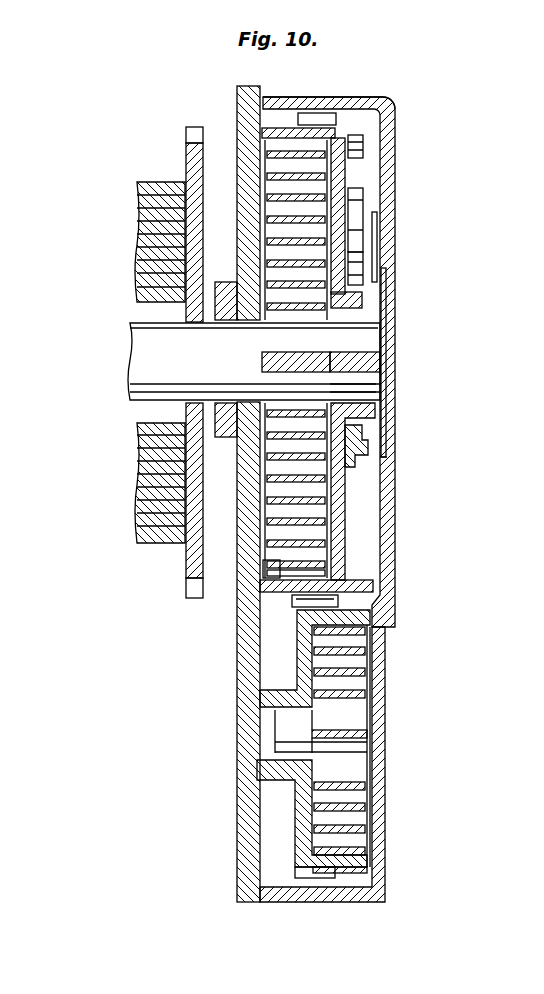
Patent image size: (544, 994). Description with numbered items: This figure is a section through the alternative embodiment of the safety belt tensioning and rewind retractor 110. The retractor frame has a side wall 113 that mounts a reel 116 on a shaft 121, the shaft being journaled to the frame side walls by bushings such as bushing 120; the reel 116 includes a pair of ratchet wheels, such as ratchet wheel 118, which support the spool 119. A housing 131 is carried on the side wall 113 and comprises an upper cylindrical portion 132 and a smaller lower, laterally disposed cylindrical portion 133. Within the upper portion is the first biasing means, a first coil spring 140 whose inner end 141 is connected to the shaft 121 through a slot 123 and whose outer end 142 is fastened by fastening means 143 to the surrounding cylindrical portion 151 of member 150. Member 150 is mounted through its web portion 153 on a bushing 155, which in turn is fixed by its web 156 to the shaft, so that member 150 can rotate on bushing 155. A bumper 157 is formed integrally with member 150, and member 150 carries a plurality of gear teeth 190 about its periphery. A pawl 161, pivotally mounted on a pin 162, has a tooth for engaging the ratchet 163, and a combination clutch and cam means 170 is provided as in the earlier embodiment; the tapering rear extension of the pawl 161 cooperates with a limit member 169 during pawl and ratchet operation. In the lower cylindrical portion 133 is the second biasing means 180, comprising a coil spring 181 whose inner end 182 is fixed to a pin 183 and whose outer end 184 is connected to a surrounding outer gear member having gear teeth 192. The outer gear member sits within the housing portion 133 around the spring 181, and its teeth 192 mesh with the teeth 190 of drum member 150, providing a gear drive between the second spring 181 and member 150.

The retractor 110 is at (172, 128).
The side wall 113 is at (237, 108).
The reel 116 is at (143, 548).
The ratchet wheel 118 is at (186, 156).
The spool 119 is at (136, 432).
The bushing 120 is at (224, 413).
The shaft 121 is at (150, 331).
The slot 123 is at (378, 353).
The housing 131 is at (374, 362).
The upper cylindrical portion 132 is at (388, 142).
The lower cylindrical portion 133 is at (383, 812).
The first coil spring 140 is at (362, 108).
The inner end 141 is at (277, 360).
The outer end 142 is at (292, 603).
The fastening means 143 is at (278, 563).
The member 150 is at (348, 166).
The cylindrical portion 151 is at (283, 126).
The web portion 153 is at (342, 507).
The bushing 155 is at (373, 423).
The web 156 is at (380, 383).
The bumper 157 is at (397, 110).
The pawl 161 is at (356, 238).
The pin 162 is at (373, 207).
The ratchet 163 is at (354, 463).
The limit member 169 is at (363, 262).
The combination clutch and cam means 170 is at (376, 226).
The second biasing means 180 is at (290, 812).
The coil spring 181 is at (358, 660).
The inner end 182 is at (367, 742).
The pin 183 is at (287, 724).
The outer end 184 is at (383, 877).
The gear teeth 190 is at (318, 118).
The gear teeth 192 is at (292, 872).